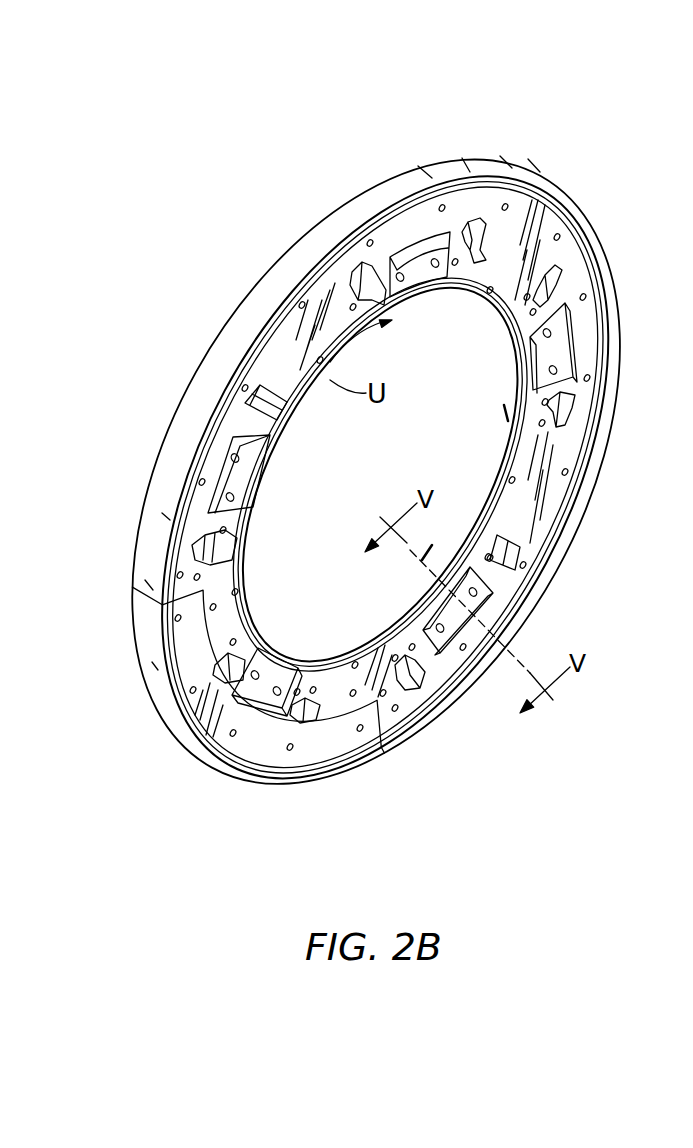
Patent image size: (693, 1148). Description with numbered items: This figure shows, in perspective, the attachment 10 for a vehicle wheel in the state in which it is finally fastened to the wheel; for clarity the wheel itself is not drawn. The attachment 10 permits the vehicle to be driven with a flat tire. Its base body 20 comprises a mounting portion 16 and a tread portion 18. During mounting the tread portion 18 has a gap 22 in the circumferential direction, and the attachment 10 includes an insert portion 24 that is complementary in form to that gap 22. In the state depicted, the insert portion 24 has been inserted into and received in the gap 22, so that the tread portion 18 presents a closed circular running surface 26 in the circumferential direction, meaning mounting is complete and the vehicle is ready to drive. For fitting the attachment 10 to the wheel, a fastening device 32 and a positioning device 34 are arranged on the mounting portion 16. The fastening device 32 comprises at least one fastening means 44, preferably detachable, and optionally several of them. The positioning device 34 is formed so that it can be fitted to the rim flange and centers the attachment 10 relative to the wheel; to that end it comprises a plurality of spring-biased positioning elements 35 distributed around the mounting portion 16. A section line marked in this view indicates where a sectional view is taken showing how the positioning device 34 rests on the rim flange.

The attachment 10 is at (562, 140).
The mounting portion 16 is at (472, 312).
The tread portion 18 is at (560, 507).
The base body 20 is at (570, 432).
The gap 22 is at (305, 792).
The insert portion 24 is at (238, 790).
The closed circular running surface 26 is at (325, 237).
The fastening device 32 is at (492, 234).
The positioning device 34 is at (578, 322).
The spring-biased positioning elements 35 is at (413, 255).
The fastening means 44 is at (203, 557).